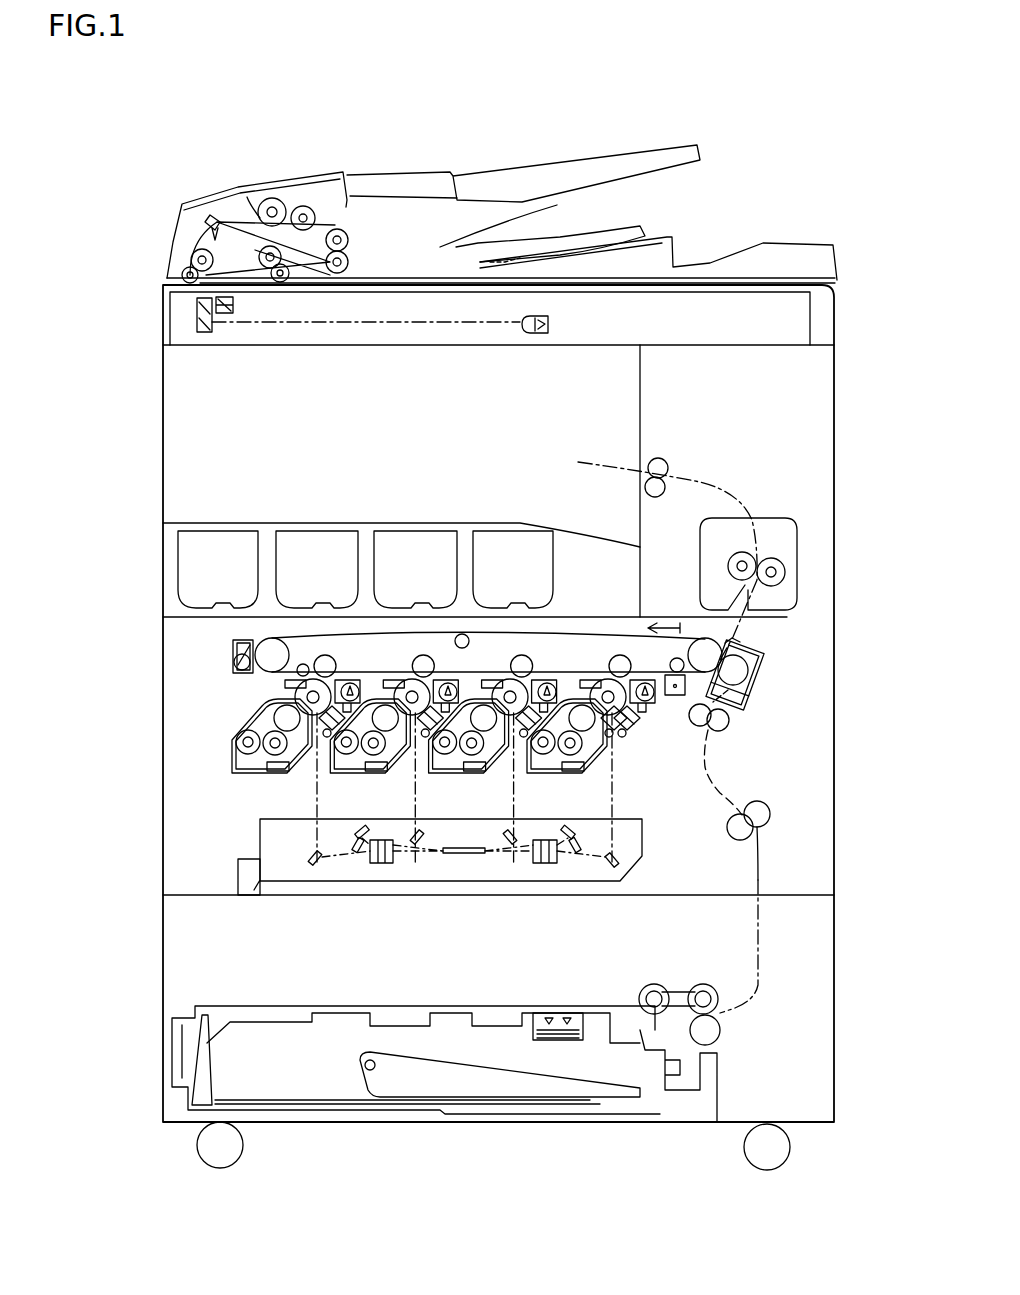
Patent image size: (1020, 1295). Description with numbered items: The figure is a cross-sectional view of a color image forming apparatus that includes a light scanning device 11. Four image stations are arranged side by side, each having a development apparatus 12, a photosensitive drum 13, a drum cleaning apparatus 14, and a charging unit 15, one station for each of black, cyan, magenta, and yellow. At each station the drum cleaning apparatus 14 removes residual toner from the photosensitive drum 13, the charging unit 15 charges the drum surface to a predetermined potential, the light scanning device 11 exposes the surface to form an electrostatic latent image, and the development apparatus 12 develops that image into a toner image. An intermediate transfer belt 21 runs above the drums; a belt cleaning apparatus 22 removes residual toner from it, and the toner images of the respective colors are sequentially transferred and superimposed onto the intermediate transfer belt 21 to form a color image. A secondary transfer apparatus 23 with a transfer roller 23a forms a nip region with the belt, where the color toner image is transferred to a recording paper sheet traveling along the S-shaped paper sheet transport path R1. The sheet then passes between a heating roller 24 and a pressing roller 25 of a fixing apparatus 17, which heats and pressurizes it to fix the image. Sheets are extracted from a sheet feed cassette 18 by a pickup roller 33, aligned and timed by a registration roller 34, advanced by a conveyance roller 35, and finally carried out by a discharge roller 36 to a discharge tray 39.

The light scanning device 11 is at (650, 845).
The development apparatus 12 is at (542, 778).
The photosensitive drum 13 is at (600, 684).
The drum cleaning apparatus 14 is at (650, 700).
The charging unit 15 is at (630, 728).
The fixing apparatus 17 is at (798, 545).
The sheet feed cassette 18 is at (417, 1006).
The intermediate transfer belt 21 is at (452, 634).
The belt cleaning apparatus 22 is at (232, 660).
The secondary transfer apparatus 23 is at (765, 657).
The transfer roller 23a is at (744, 668).
The heating roller 24 is at (729, 558).
The pressing roller 25 is at (786, 572).
The pickup roller 33 is at (655, 984).
The registration roller 34 is at (722, 730).
The conveyance roller 35 is at (766, 824).
The discharge roller 36 is at (658, 458).
The discharge tray 39 is at (290, 522).
The paper sheet transport path R1 is at (703, 797).